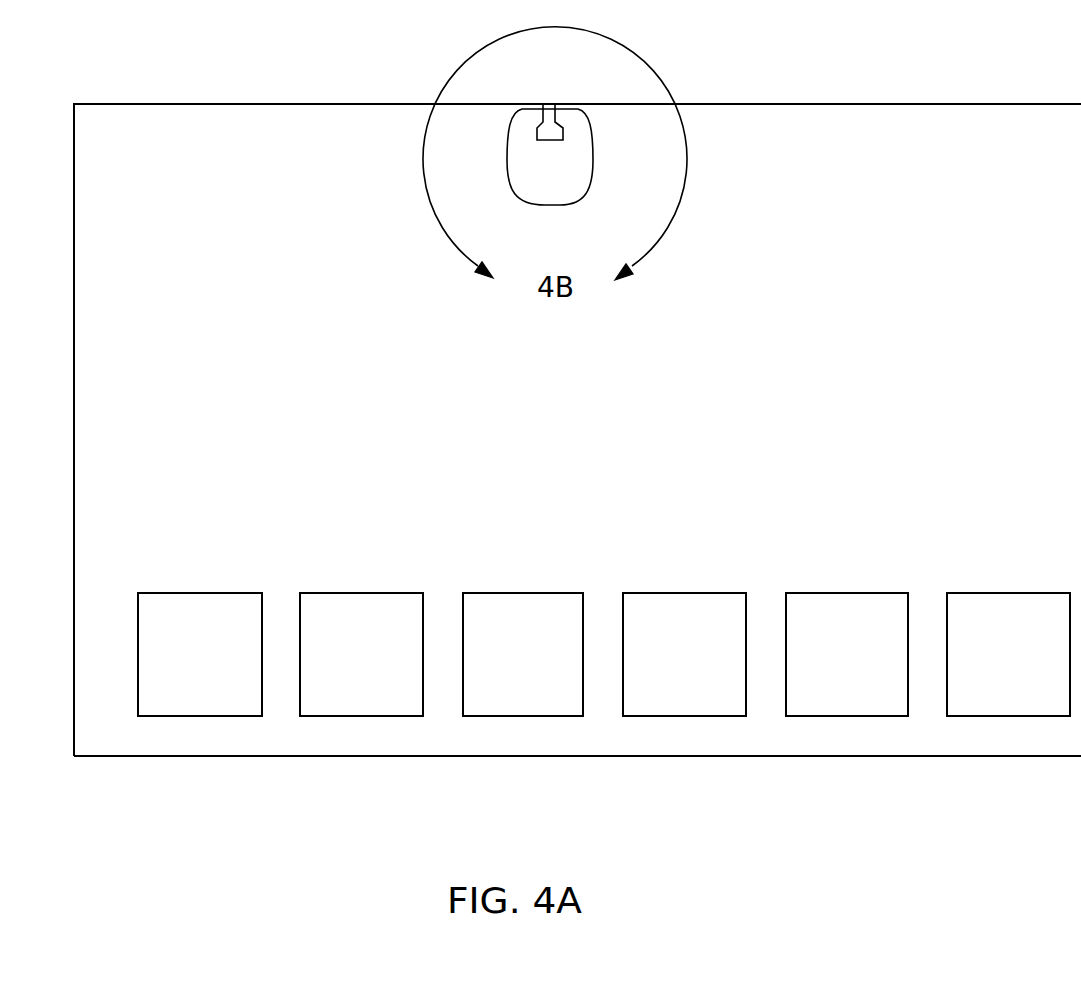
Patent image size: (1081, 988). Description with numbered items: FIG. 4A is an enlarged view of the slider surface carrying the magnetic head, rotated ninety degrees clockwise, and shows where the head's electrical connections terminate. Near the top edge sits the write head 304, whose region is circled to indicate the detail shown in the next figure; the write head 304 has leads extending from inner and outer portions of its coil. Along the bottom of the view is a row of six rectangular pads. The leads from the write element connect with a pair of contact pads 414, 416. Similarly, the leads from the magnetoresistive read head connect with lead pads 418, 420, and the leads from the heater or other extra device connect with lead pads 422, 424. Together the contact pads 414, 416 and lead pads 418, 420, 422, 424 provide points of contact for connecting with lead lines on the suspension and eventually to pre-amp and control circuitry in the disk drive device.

The write head 304 is at (593, 160).
The contact pad 414 is at (400, 653).
The contact pad 416 is at (563, 650).
The lead pad 418 is at (727, 650).
The lead pad 420 is at (888, 650).
The lead pad 422 is at (235, 650).
The lead pad 424 is at (1050, 650).